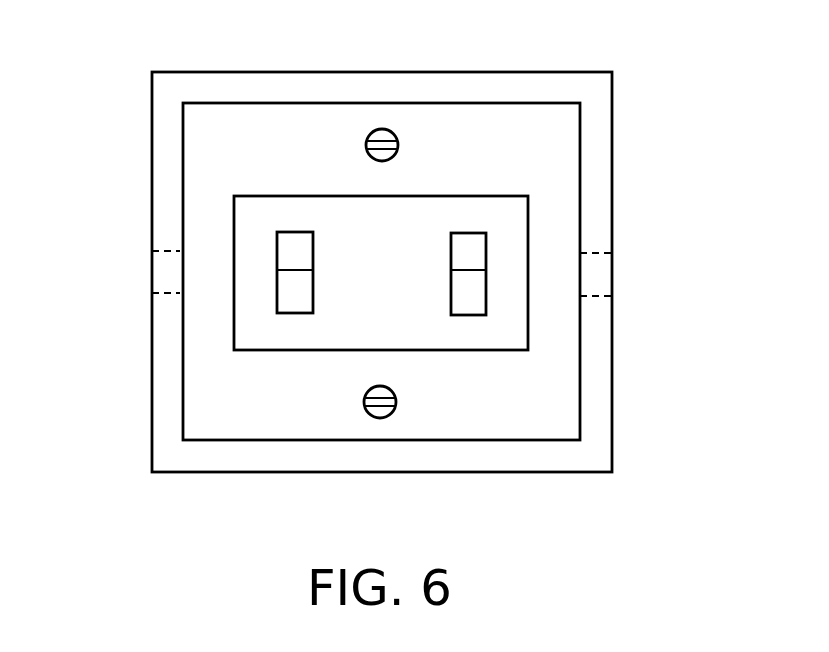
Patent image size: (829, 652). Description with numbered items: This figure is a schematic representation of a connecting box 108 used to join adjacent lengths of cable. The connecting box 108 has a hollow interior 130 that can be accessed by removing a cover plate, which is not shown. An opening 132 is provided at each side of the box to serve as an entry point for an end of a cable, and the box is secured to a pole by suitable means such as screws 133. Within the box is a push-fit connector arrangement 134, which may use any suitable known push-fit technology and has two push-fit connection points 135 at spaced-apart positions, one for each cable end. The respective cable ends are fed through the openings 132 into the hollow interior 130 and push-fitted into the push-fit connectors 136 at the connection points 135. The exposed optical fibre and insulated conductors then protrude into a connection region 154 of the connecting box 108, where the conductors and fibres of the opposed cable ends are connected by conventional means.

The connecting box 108 is at (575, 71).
The hollow interior 130 is at (432, 427).
The opening 132 is at (172, 294).
The screws 133 is at (380, 129).
The push-fit connector arrangement 134 is at (510, 193).
The push-fit connection points 135 is at (283, 318).
The push-fit connectors 136 is at (277, 250).
The connection region 154 is at (397, 232).